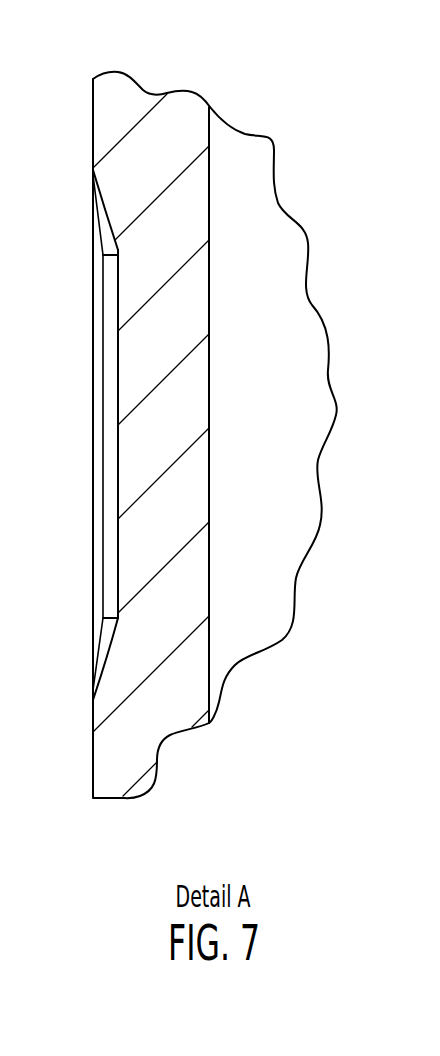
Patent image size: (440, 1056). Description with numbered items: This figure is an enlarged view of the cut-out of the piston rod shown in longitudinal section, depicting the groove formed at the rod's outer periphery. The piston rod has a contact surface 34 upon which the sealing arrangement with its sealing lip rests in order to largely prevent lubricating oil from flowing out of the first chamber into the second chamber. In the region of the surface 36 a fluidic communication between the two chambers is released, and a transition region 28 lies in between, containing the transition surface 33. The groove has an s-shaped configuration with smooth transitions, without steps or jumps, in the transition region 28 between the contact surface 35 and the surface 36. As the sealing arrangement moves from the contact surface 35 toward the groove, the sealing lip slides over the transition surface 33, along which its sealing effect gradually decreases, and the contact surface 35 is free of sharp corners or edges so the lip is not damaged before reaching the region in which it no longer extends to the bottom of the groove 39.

The transition region 28 is at (102, 198).
The transition surface 33 is at (92, 216).
The contact surface 34 is at (93, 125).
The contact surface 35 is at (117, 213).
The surface 36 is at (120, 275).
The bottom of the groove 39 is at (118, 468).